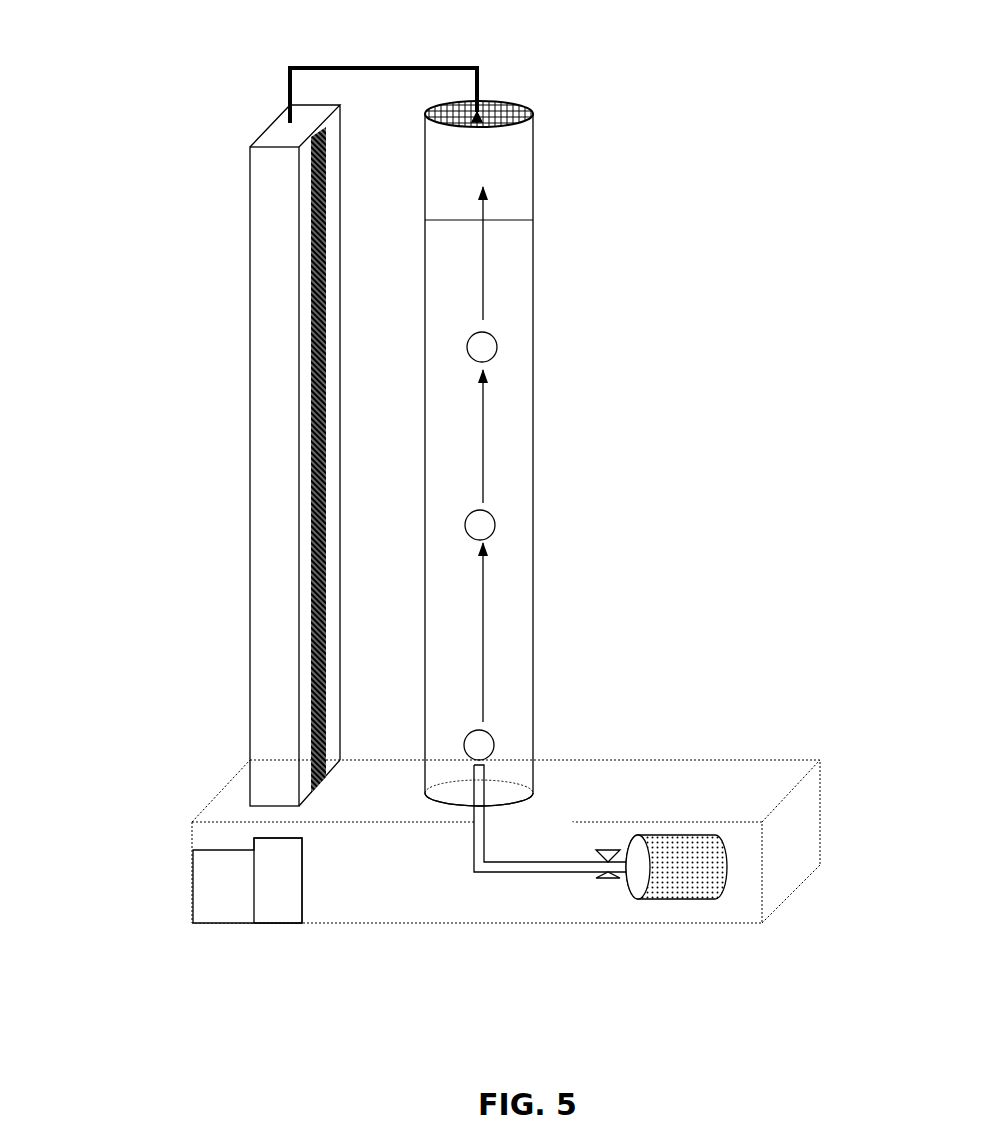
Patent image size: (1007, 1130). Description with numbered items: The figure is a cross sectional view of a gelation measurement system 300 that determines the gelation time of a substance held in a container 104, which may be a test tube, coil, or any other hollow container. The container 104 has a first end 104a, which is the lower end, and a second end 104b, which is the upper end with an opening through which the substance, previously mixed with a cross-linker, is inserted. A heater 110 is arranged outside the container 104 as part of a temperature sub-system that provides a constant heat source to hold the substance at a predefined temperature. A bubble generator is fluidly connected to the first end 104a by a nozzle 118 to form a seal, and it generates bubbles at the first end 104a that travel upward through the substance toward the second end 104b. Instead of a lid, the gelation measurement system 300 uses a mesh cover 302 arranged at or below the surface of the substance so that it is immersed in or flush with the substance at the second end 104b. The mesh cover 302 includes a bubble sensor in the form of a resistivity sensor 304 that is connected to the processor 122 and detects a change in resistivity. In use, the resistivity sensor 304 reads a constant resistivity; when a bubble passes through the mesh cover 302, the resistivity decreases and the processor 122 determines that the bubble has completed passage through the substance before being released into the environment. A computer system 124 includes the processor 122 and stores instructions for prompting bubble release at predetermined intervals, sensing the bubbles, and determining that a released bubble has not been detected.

The gelation measurement system 300 is at (490, 491).
The resistivity sensor 304 is at (480, 118).
The mesh cover 302 is at (532, 115).
The second end 104b is at (535, 202).
The heater 110 is at (260, 455).
The container 104 is at (619, 404).
The first end 104a is at (530, 763).
The nozzle 118 is at (687, 858).
The computer system 124 is at (270, 848).
The processor 122 is at (166, 859).